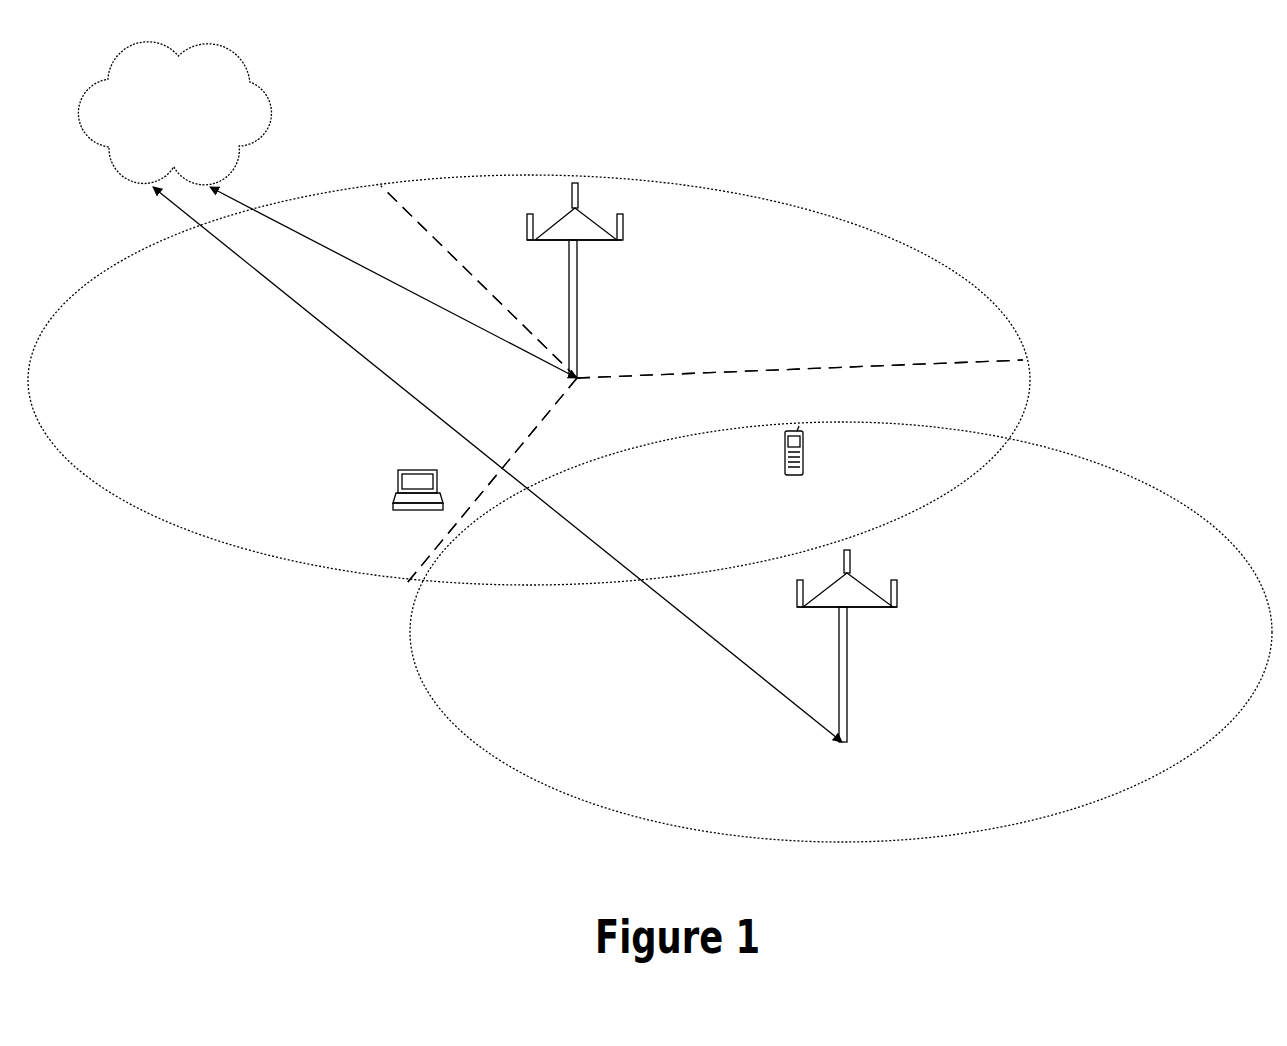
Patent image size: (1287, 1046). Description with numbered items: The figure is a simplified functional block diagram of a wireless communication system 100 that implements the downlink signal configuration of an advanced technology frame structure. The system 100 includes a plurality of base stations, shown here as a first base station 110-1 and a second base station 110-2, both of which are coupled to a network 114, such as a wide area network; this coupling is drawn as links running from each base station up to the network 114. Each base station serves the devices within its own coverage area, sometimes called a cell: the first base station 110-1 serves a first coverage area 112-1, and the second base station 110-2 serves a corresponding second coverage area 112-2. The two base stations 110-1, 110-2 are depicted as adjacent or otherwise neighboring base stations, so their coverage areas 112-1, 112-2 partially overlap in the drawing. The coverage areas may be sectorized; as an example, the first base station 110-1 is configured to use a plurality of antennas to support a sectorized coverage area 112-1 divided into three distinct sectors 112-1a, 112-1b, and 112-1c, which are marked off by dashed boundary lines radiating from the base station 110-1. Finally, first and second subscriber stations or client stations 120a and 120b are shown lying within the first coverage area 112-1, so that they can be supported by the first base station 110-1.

The wireless communication system 100 is at (197, 757).
The network 114 is at (278, 66).
The first base station 110-1 is at (622, 348).
The second base station 110-2 is at (898, 709).
The first coverage area 112-1 is at (385, 588).
The first sector 112-1a is at (698, 423).
The second sector 112-1b is at (762, 270).
The third sector 112-1c is at (153, 387).
The second coverage area 112-2 is at (712, 832).
The first client station 120a is at (800, 476).
The second client station 120b is at (393, 487).